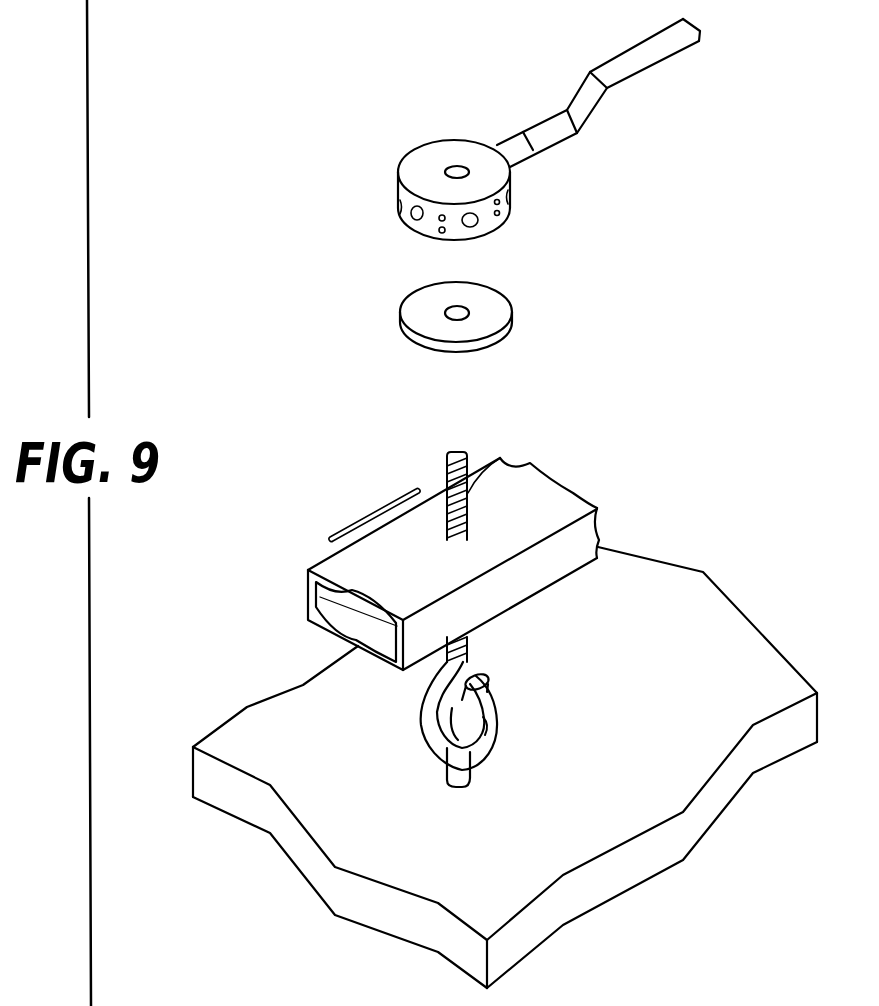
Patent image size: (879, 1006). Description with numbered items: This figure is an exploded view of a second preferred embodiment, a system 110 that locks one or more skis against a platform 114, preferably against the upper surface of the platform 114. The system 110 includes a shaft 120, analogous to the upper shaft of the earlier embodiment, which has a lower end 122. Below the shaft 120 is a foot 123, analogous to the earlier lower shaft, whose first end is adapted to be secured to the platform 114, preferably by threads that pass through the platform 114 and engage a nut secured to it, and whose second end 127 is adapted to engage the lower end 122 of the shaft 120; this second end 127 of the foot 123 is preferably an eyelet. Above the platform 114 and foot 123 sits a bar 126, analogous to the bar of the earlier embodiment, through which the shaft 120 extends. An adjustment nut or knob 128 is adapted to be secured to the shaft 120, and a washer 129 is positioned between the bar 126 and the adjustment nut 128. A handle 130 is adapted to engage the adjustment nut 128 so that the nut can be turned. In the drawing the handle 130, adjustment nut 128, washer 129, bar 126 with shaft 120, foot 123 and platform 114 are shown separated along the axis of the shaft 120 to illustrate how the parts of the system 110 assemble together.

The system 110 is at (553, 388).
The platform 114 is at (768, 680).
The shaft 120 is at (468, 493).
The lower end 122 is at (440, 705).
The foot 123 is at (490, 750).
The bar 126 is at (587, 535).
The second end 127 is at (483, 717).
The adjustment nut 128 is at (497, 229).
The washer 129 is at (497, 320).
The handle 130 is at (692, 43).